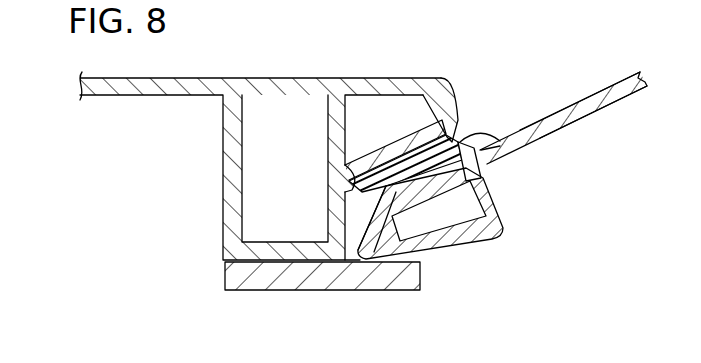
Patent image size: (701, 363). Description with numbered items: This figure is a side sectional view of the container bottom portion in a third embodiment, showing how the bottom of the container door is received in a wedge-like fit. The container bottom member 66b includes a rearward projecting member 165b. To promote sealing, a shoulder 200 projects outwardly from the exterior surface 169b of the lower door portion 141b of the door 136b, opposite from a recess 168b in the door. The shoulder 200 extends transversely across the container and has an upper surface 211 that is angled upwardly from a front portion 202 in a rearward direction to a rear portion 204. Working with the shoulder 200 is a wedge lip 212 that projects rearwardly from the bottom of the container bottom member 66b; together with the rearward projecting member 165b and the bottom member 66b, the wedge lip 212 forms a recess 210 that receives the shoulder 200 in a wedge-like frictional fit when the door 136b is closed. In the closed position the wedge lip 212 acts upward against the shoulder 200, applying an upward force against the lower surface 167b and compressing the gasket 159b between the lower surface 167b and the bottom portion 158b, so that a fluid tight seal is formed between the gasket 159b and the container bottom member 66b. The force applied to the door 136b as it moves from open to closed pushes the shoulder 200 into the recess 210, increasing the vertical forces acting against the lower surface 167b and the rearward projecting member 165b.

The container bottom member 66b is at (222, 182).
The rearward projecting member 165b is at (447, 82).
The lower surface 167b is at (345, 179).
The gasket 159b is at (462, 126).
The lower door portion 141b is at (600, 104).
The door 136b is at (622, 82).
The exterior surface 169b is at (592, 117).
The recess 168b is at (461, 143).
The bottom portion 158b is at (482, 169).
The upper surface 211 is at (500, 156).
The shoulder 200 is at (447, 192).
The rear portion 204 is at (497, 202).
The recess 210 is at (364, 230).
The front portion 202 is at (345, 205).
The wedge lip 212 is at (371, 283).